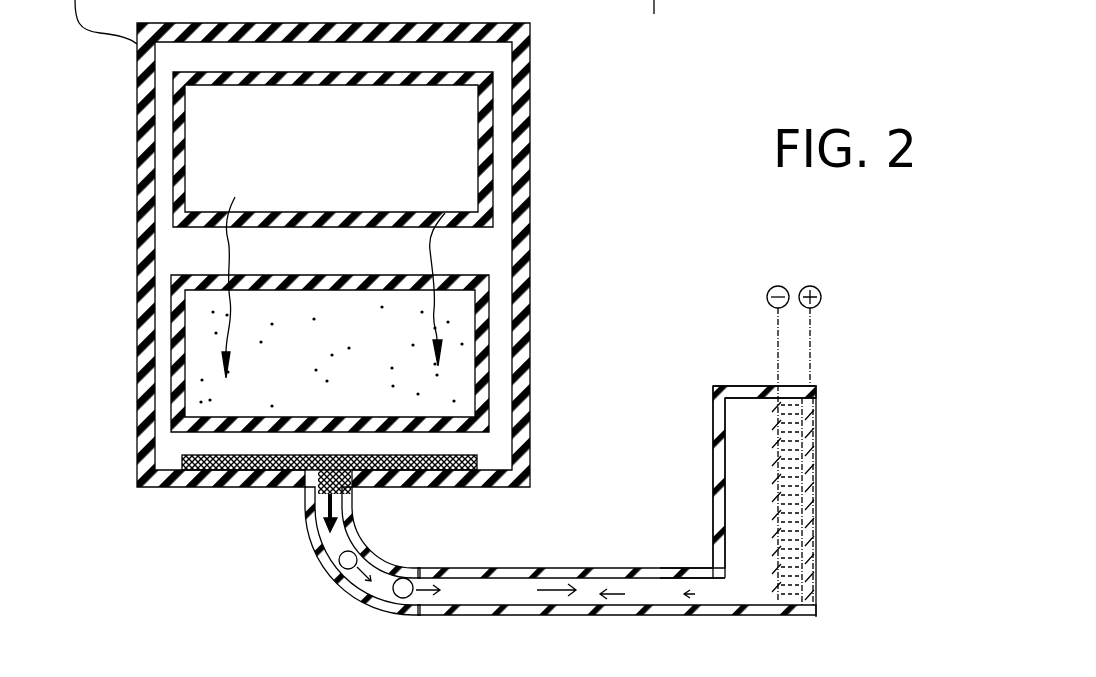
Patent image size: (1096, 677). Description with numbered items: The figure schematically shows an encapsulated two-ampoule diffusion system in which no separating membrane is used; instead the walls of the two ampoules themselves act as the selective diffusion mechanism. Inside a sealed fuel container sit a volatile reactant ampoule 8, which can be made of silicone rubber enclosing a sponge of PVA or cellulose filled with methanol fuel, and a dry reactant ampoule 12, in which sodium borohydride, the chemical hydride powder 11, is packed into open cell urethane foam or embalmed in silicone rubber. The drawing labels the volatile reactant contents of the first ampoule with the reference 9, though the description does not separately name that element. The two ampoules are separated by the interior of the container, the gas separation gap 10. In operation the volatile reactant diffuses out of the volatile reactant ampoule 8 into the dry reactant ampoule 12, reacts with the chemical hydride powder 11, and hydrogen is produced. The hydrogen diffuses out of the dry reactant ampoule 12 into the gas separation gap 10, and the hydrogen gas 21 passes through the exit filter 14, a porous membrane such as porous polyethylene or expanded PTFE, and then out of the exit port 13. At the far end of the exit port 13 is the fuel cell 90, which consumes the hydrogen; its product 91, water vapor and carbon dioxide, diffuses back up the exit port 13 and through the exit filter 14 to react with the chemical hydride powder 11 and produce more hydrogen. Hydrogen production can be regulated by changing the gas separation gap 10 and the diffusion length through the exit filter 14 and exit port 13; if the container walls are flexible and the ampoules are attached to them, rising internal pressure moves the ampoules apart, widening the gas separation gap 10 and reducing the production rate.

The volatile reactant ampoule 8 is at (173, 125).
The methanol and water vapor 9 is at (215, 178).
The interior of the container / gas separation gap 10 is at (478, 256).
The chemical hydride powder 11 is at (440, 345).
The dry reactant ampoule 12 is at (490, 423).
The exit port 13 is at (425, 567).
The exit filter 14 is at (240, 472).
The hydrogen gas 21 is at (345, 590).
The fuel cell 90 is at (816, 386).
The product 91 is at (678, 577).